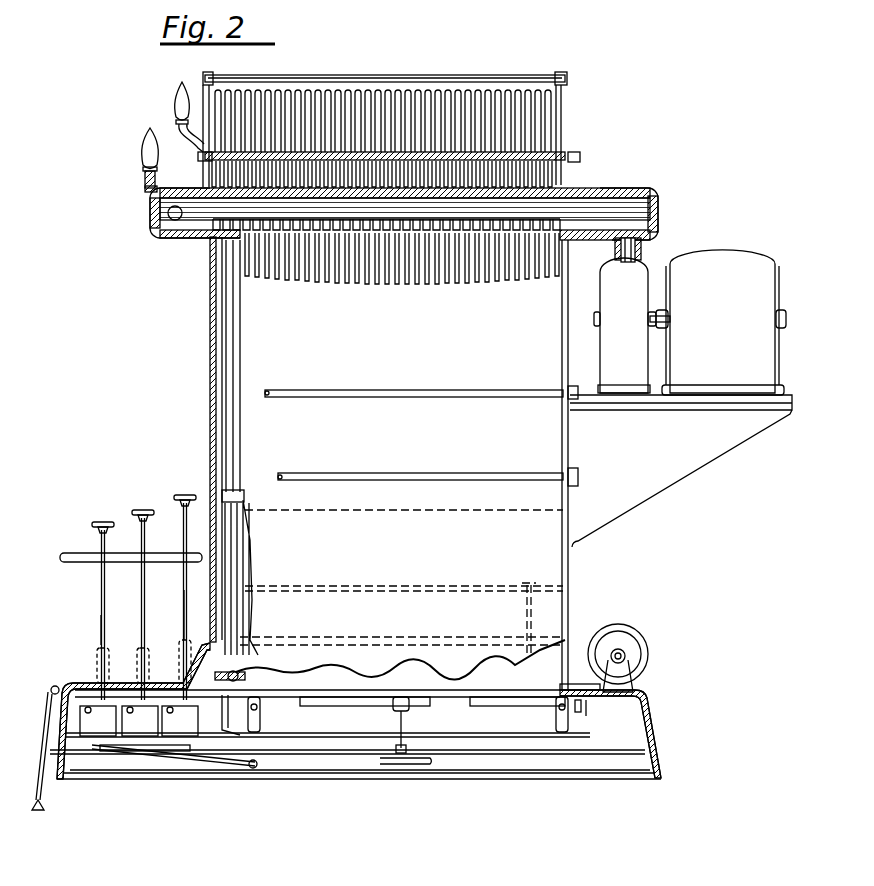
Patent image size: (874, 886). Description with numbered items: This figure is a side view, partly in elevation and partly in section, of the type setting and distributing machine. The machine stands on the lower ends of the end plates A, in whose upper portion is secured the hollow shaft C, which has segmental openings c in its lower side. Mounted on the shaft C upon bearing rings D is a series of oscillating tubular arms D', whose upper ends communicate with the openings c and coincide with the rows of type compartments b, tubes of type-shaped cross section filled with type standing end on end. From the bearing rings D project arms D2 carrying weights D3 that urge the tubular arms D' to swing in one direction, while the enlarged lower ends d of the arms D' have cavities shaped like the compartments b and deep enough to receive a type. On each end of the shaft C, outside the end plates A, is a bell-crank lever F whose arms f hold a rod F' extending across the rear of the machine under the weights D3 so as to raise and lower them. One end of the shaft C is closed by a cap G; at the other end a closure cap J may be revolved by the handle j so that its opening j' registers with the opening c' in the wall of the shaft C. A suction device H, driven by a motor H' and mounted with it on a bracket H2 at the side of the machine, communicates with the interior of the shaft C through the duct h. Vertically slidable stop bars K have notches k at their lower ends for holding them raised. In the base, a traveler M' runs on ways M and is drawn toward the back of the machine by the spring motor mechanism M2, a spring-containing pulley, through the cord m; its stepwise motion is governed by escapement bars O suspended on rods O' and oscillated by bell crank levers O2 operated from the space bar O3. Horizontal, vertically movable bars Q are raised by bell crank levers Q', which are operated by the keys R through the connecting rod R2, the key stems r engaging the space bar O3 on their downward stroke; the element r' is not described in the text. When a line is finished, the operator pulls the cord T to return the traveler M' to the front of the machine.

The end plates A is at (208, 352).
The hollow shaft C is at (592, 208).
The segmental openings c is at (408, 192).
The opening in shaft wall c' is at (151, 221).
The bearing rings D is at (205, 366).
The oscillating tubular arms D' is at (363, 279).
The arms D2 is at (545, 170).
The weights D3 is at (552, 112).
The lower ends of tubular arms d is at (243, 500).
The type compartments b is at (228, 555).
The bell-crank lever F is at (186, 119).
The rod F' is at (385, 100).
The arms of bell-crank levers f is at (204, 168).
The cap G is at (646, 192).
The duct h is at (643, 256).
The suction device H is at (625, 325).
The motor H' is at (718, 322).
The bracket H2 is at (681, 471).
The closure cap J is at (158, 238).
The handle j is at (137, 158).
The opening in cap j' is at (135, 199).
The stop bars K is at (272, 671).
The notches k is at (228, 675).
The ways M is at (592, 713).
The traveler M' is at (232, 713).
The spring motor mechanism M2 is at (626, 637).
The cord m is at (548, 690).
The escapement bars O is at (327, 686).
The rods O' is at (405, 769).
The bell crank levers O2 is at (408, 730).
The space bar O3 is at (134, 748).
The horizontal vertically movable bars Q is at (432, 712).
The bell crank levers Q' is at (423, 720).
The keys R is at (102, 520).
The connecting rod R2 is at (444, 746).
The stems of keys r is at (113, 616).
The rod r' is at (172, 614).
The cord T is at (53, 686).